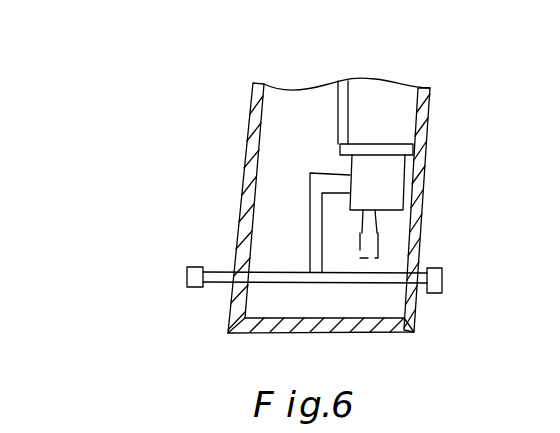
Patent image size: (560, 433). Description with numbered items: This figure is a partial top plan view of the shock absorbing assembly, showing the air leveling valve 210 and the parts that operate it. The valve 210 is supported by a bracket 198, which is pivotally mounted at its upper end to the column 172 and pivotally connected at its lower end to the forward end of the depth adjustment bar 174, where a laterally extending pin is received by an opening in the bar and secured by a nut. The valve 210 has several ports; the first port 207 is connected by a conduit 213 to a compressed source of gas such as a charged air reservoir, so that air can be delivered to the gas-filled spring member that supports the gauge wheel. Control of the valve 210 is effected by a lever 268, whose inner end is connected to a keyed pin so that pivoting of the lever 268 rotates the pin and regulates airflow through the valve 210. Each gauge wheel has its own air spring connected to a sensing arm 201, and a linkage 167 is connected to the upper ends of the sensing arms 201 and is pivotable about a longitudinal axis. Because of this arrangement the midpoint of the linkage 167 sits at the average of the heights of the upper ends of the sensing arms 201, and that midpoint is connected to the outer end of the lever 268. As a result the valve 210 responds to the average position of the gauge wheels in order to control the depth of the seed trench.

The column 172 is at (430, 128).
The linkage 167 is at (375, 325).
The depth adjustment bar 174 is at (334, 94).
The bracket 198 is at (380, 143).
The air leveling valve 210 is at (404, 193).
The first port 207 is at (379, 221).
The conduit 213 is at (381, 248).
The lever 268 is at (308, 223).
The sensing arm 201 is at (187, 276).